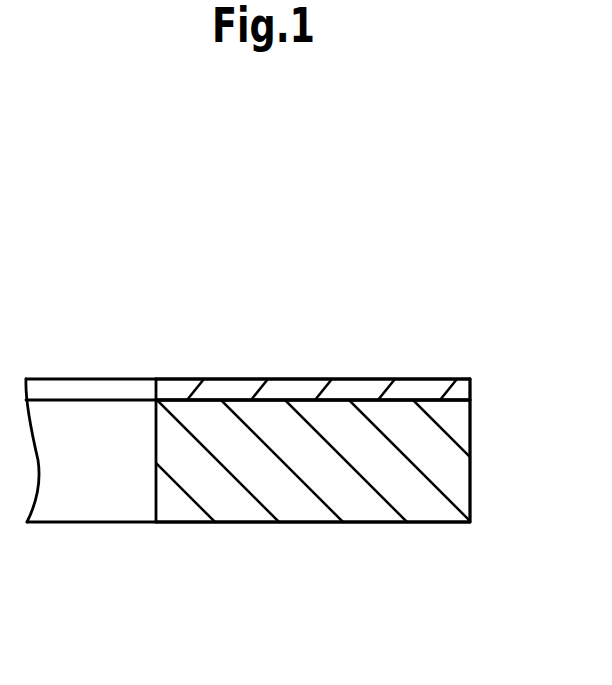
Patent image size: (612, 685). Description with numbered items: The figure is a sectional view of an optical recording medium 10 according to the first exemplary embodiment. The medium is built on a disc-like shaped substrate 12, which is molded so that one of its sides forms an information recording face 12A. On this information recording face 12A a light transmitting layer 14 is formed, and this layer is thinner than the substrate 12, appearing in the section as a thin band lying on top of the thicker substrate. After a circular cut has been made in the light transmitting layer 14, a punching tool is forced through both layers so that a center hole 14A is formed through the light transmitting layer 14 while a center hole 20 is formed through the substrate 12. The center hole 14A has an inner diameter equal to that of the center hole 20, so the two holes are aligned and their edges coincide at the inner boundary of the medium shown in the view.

The optical recording medium 10 is at (328, 256).
The substrate 12 is at (470, 449).
The information recording face 12A is at (242, 400).
The light transmitting layer 14 is at (434, 377).
The center hole 14A is at (156, 394).
The center hole 20 is at (157, 500).